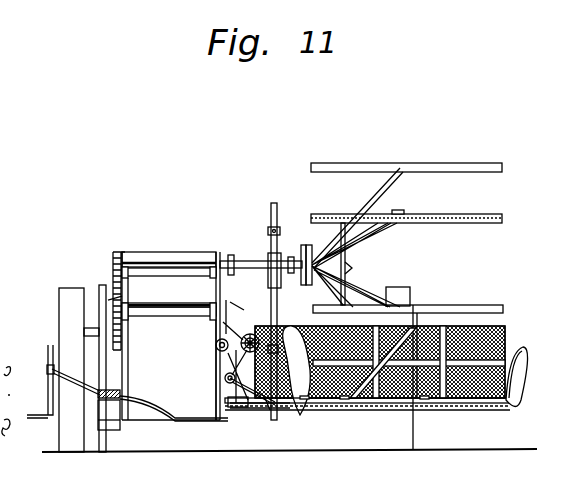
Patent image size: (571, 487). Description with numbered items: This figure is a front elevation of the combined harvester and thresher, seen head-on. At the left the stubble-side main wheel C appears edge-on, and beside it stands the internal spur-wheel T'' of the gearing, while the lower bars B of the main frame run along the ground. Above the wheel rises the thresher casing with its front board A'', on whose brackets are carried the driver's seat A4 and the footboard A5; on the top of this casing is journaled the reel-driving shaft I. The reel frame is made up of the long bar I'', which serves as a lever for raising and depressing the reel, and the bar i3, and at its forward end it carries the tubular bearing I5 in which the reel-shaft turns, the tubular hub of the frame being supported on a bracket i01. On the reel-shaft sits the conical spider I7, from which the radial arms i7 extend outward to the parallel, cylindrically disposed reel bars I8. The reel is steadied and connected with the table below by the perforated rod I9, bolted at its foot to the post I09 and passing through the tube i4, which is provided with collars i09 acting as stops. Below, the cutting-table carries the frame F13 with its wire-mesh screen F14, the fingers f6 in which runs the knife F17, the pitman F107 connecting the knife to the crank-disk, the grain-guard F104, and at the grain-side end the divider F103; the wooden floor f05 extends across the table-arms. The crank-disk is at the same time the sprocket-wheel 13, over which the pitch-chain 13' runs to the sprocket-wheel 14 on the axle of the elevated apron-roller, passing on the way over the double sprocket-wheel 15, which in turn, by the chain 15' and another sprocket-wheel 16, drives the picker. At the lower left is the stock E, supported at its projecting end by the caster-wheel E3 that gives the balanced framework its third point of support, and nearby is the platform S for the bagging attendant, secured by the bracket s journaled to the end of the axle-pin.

The stubble-side main wheel C is at (72, 290).
The bracket i01 is at (117, 256).
The internal spur-wheel T'' is at (126, 294).
The driver's seat A4 is at (158, 262).
The footboard A5 is at (163, 311).
The front board A'' is at (179, 370).
The shaft I is at (204, 241).
The long bar I'' is at (261, 255).
The tube i4 is at (288, 275).
The tubular bearing I5 is at (305, 256).
The perforated rod I9 is at (277, 313).
The collars i09 is at (279, 229).
The bar i3 is at (268, 283).
The reel bars I8 is at (461, 170).
The radial arms i7 is at (373, 212).
The conical spider I7 is at (346, 266).
The frame F13 is at (470, 306).
The wire-mesh screen F14 is at (503, 325).
The post I09 is at (299, 416).
The knife F17 is at (434, 411).
The grain-guard F104 is at (325, 432).
The pitman F107 is at (266, 412).
The divider F103 is at (527, 378).
The sprocket-wheel 16 is at (252, 334).
The sprocket-wheel 14 is at (232, 336).
The fingers f6 is at (233, 320).
The chain 15' is at (215, 374).
The pitch-chain 13' is at (210, 372).
The double sprocket-wheel 15 is at (230, 391).
The floor f05 is at (249, 388).
The sprocket-wheel 13 is at (259, 421).
The stock E is at (121, 392).
The caster-wheel E3 is at (69, 400).
The platform S is at (45, 418).
The bracket s is at (47, 378).
The lower bars B is at (101, 430).